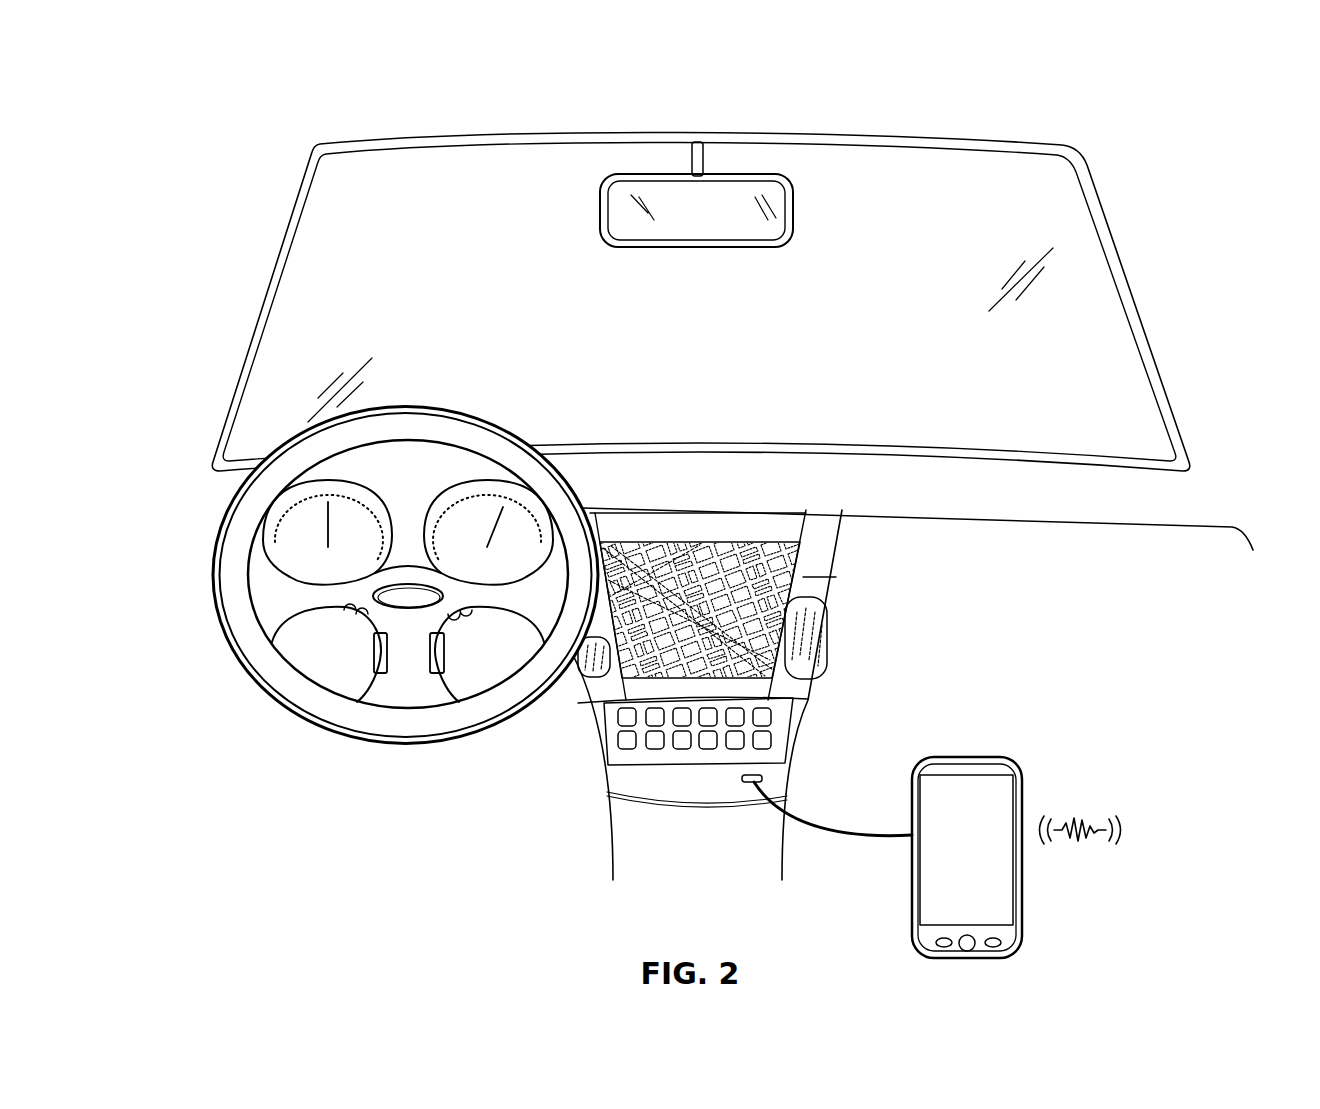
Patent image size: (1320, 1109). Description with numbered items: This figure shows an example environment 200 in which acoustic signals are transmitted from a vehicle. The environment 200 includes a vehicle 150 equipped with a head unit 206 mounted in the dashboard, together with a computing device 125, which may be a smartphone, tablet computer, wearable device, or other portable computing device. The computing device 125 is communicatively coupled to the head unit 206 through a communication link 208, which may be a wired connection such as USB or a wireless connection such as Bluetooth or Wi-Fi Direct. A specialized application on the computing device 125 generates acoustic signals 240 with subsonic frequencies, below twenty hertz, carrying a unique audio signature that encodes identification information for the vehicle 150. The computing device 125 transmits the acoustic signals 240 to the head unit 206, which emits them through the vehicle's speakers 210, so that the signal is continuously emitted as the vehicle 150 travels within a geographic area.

The environment 200 is at (359, 108).
The vehicle 150 is at (196, 428).
The head unit 206 is at (741, 490).
The speakers 210 is at (817, 640).
The communication link 208 is at (853, 831).
The computing device 125 is at (971, 756).
The acoustic signals 240 is at (1076, 815).